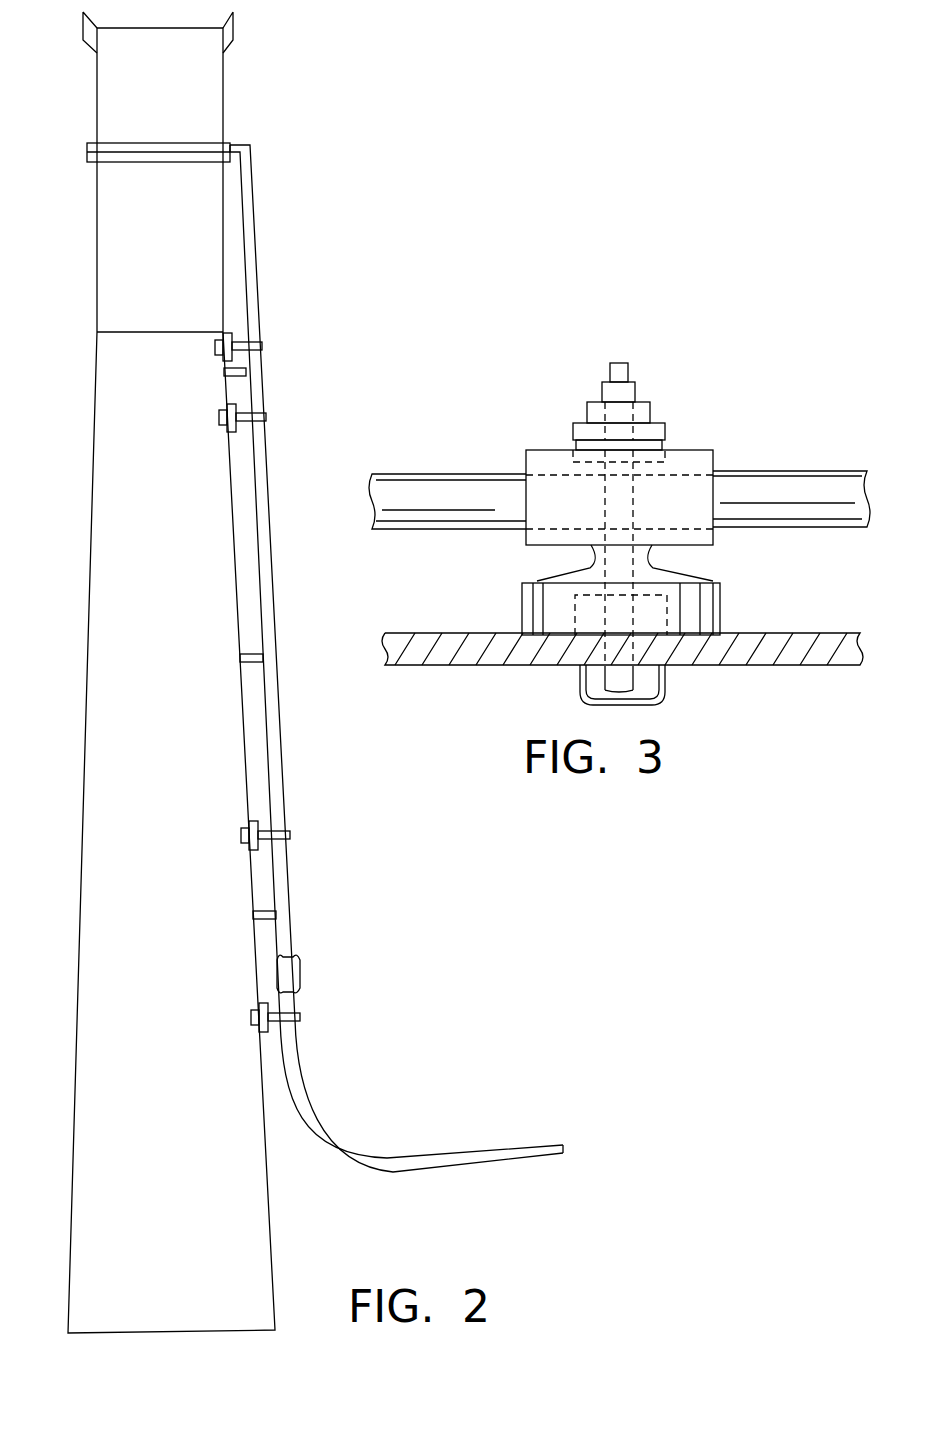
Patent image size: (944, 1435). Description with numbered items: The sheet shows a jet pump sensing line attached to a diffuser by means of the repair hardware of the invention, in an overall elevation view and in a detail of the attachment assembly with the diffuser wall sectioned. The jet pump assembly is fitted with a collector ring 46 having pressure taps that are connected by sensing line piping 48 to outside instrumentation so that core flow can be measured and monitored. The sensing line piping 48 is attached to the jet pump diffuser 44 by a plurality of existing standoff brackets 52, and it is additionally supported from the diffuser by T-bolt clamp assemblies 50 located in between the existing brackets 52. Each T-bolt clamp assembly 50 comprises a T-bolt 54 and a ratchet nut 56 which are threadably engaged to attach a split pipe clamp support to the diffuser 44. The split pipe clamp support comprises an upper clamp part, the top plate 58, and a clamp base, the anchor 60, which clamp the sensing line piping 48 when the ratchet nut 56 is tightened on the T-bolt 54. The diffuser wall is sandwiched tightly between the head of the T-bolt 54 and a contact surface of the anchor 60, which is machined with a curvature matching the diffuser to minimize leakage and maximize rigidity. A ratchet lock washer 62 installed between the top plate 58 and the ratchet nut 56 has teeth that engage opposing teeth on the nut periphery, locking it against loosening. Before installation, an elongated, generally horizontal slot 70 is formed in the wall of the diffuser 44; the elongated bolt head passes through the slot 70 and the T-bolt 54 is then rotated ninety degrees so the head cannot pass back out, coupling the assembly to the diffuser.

In FIG. 2, the jet pump diffuser 44 is at (90, 549).
In FIG. 3, the jet pump diffuser 44 is at (795, 633).
In FIG. 2, the collector ring 46 is at (88, 155).
In FIG. 2, the sensing line piping 48 is at (274, 207).
In FIG. 3, the sensing line piping 48 is at (788, 471).
In FIG. 2, the T-bolt clamp assembly 50 is at (270, 340).
In FIG. 2, the standoff bracket 52 is at (240, 375).
In FIG. 3, the T-bolt 54 is at (665, 698).
In FIG. 3, the ratchet nut 56 is at (650, 412).
In FIG. 3, the top plate 58 is at (680, 450).
In FIG. 3, the anchor 60 is at (688, 574).
In FIG. 3, the ratchet lock washer 62 is at (572, 432).
In FIG. 3, the slot 70 is at (600, 682).